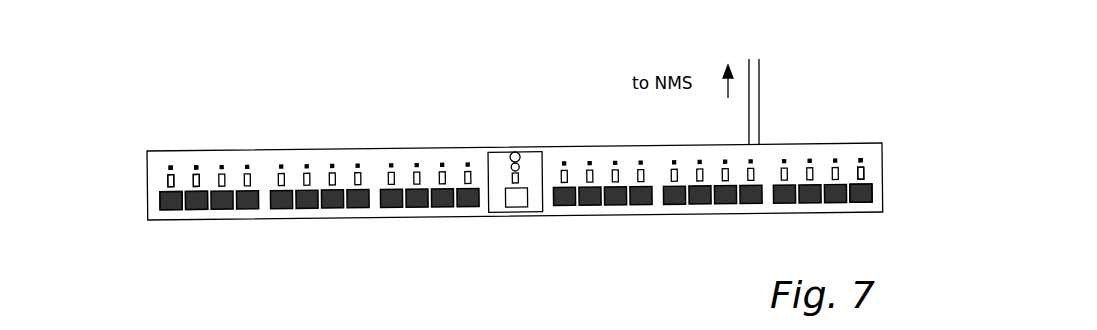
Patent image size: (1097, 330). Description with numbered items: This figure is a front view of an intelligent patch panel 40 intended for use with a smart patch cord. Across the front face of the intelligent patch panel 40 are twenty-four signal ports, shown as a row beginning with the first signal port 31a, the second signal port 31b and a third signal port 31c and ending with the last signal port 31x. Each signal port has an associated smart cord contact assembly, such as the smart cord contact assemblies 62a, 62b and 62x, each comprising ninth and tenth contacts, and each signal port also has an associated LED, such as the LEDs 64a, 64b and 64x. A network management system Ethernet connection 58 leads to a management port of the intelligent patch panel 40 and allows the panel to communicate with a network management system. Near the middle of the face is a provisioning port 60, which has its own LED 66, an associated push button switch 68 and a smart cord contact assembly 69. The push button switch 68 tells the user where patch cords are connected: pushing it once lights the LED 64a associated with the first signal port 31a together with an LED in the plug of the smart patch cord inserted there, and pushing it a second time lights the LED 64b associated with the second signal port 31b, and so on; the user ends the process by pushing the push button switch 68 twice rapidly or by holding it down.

The intelligent patch panel 40 is at (380, 108).
The network management system (NMS) Ethernet connection 58 is at (753, 90).
The provisioning port 60 is at (505, 206).
The push button switch 68 is at (518, 155).
The LED 66 is at (518, 167).
The smart cord contact assembly 69 is at (519, 184).
The first signal port 31a is at (165, 209).
The second signal port 31b is at (198, 205).
The signal port 31c is at (225, 205).
The signal port 31x is at (868, 207).
The smart cord contact assembly 62a is at (168, 181).
The smart cord contact assembly 62b is at (199, 181).
The smart cord contact assembly 62x is at (862, 180).
The LED 64a is at (155, 157).
The LED 64b is at (202, 153).
The LED 64x is at (861, 140).